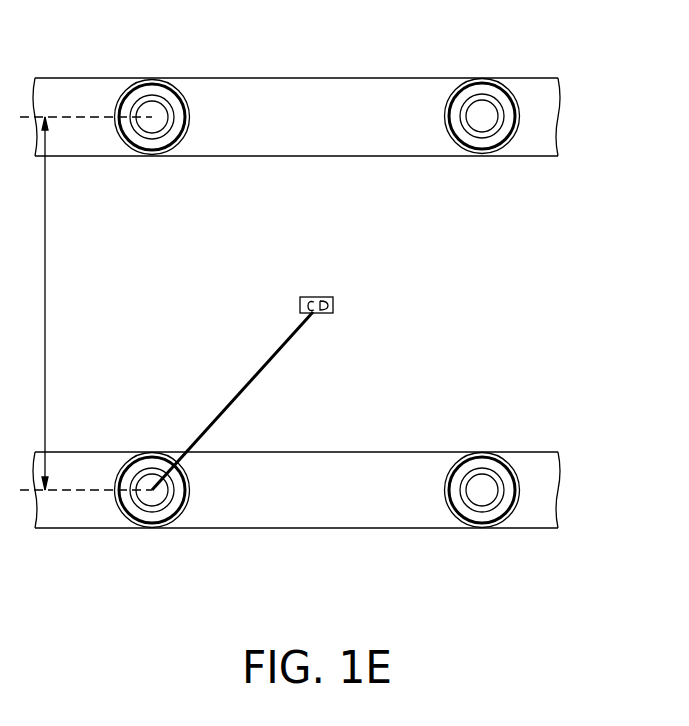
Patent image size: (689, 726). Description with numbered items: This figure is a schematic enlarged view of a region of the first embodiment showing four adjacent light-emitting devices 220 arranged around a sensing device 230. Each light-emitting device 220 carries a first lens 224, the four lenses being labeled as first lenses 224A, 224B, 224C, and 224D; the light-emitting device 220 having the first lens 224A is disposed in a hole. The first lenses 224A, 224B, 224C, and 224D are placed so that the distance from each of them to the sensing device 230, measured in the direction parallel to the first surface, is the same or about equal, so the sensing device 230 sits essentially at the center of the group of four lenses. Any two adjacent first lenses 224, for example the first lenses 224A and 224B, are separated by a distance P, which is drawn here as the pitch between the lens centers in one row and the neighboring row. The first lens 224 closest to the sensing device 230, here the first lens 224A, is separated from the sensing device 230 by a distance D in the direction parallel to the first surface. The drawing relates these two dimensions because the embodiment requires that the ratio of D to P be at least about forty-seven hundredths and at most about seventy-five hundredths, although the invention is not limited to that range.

The light-emitting device 220 is at (329, 300).
The first lens 224 is at (370, 300).
The first lens 224A is at (157, 496).
The first lens 224B is at (157, 112).
The first lens 224C is at (487, 112).
The first lens 224D is at (488, 495).
The sensing device 230 is at (313, 313).
The distance P is at (44, 317).
The distance D is at (219, 414).